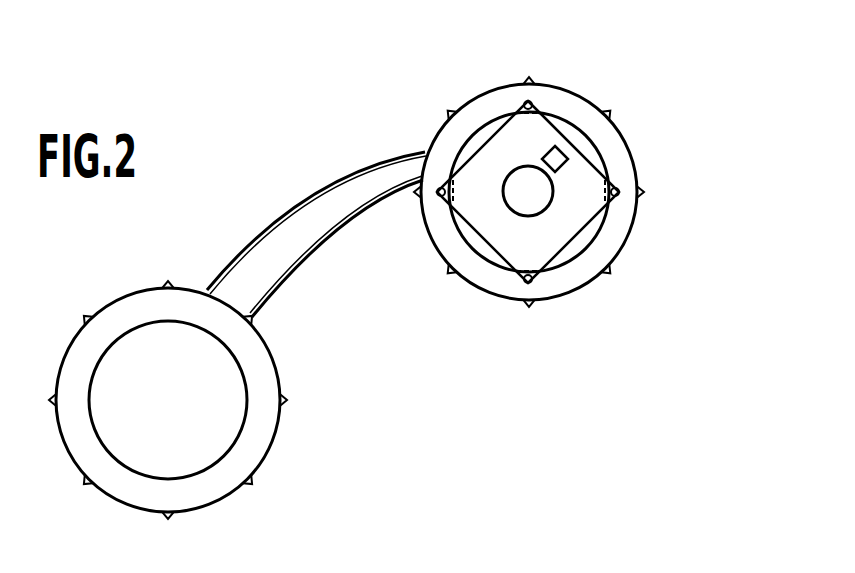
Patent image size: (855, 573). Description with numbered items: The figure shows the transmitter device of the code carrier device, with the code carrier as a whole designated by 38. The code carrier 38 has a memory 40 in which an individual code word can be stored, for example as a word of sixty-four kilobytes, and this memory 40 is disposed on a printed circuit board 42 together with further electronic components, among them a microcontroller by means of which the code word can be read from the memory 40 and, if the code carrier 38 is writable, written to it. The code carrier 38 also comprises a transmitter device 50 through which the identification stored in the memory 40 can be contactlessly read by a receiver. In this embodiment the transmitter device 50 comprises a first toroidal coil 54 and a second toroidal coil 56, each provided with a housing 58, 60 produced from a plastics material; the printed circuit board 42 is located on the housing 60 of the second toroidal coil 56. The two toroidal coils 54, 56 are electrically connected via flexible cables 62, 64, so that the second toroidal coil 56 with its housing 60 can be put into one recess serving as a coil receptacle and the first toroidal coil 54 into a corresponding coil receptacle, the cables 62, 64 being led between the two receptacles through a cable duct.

The code carrier 38 is at (427, 328).
The memory 40 is at (568, 157).
The printed circuit board 42 is at (534, 262).
The transmitter device 50 is at (316, 168).
The first toroidal coil 54 is at (213, 480).
The second toroidal coil 56 is at (613, 230).
The housing 58 is at (230, 415).
The housing 60 is at (577, 277).
The flexible cable 62 is at (327, 240).
The flexible cable 64 is at (270, 208).